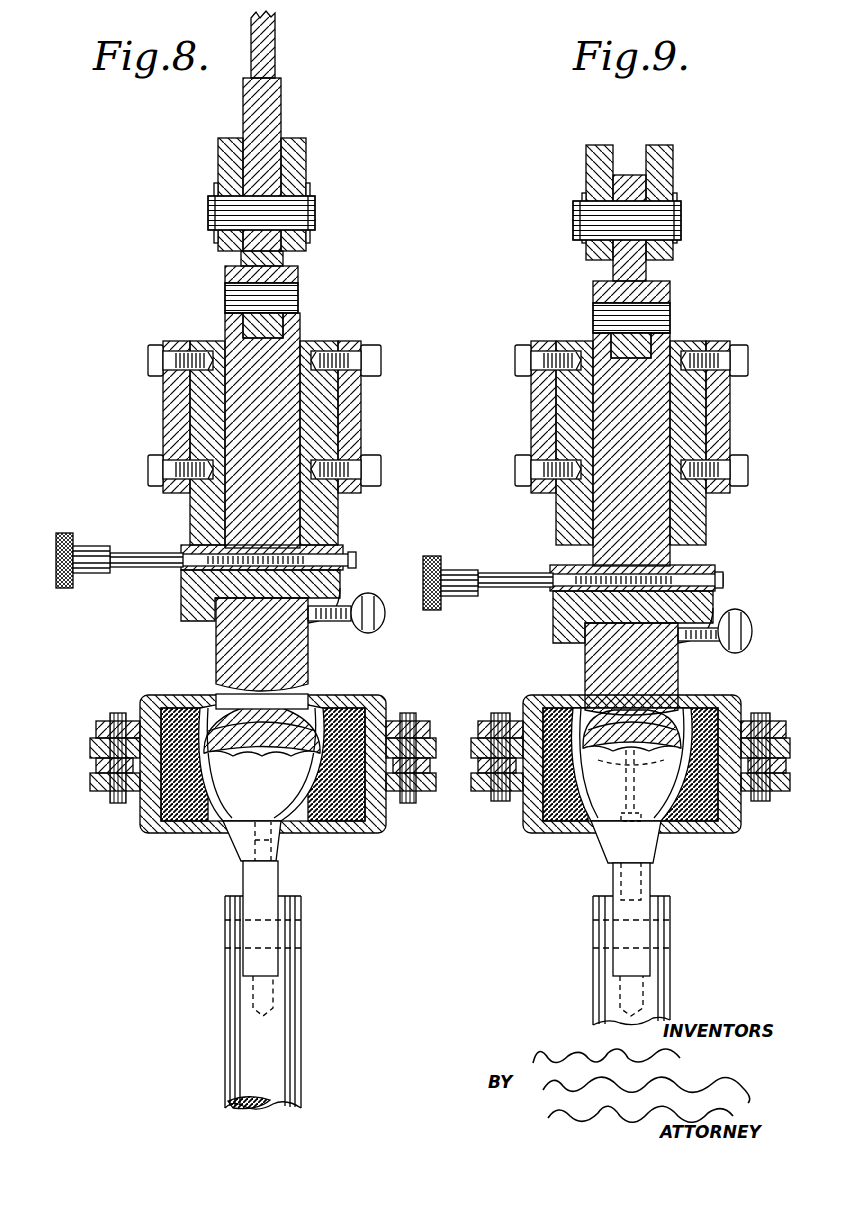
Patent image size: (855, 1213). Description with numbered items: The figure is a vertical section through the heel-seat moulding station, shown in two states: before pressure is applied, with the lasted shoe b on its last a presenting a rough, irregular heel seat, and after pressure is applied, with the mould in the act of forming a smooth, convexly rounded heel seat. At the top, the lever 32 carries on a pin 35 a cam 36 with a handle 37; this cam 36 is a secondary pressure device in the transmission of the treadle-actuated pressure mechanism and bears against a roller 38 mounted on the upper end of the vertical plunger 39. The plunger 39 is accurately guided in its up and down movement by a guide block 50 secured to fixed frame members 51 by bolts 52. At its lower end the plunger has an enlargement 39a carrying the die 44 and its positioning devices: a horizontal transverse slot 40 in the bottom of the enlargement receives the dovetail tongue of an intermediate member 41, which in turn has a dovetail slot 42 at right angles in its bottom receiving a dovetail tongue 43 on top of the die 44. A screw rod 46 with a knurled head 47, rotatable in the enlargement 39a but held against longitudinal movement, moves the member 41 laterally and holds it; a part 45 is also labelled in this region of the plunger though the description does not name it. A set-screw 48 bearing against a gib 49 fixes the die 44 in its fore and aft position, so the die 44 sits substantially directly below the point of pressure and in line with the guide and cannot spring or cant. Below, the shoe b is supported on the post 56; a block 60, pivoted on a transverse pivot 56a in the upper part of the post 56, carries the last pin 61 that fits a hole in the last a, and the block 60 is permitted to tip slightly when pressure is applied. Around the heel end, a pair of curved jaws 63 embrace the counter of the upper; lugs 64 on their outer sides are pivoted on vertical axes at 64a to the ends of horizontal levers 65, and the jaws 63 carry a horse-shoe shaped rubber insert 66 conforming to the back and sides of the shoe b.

In FIG. 8, the lever 32 is at (210, 143).
In FIG. 9, the lever 32 is at (578, 148).
In FIG. 8, the pin 35 is at (290, 200).
In FIG. 9, the pin 35 is at (673, 207).
In FIG. 8, the cam 36 is at (265, 250).
In FIG. 9, the cam 36 is at (640, 262).
In FIG. 8, the handle 37 is at (268, 28).
In FIG. 8, the roller 38 is at (240, 263).
In FIG. 9, the roller 38 is at (630, 287).
In FIG. 8, the vertical plunger 39 is at (275, 340).
In FIG. 9, the vertical plunger 39 is at (600, 520).
In FIG. 8, the enlargement 39a is at (175, 555).
In FIG. 9, the enlargement 39a is at (705, 573).
In FIG. 8, the horizontal transverse slot 40 is at (175, 580).
In FIG. 9, the horizontal transverse slot 40 is at (545, 595).
In FIG. 8, the intermediate member 41 is at (200, 580).
In FIG. 9, the intermediate member 41 is at (705, 600).
In FIG. 8, the dovetail slot 42 is at (200, 612).
In FIG. 9, the dovetail slot 42 is at (555, 625).
In FIG. 8, the dovetail tongue 43 is at (302, 617).
In FIG. 9, the dovetail tongue 43 is at (660, 625).
In FIG. 8, the die 44 is at (285, 657).
In FIG. 9, the die 44 is at (577, 665).
In FIG. 8, the pin 45 is at (285, 540).
In FIG. 9, the pin 45 is at (660, 548).
In FIG. 8, the screw rod 46 is at (147, 545).
In FIG. 9, the screw rod 46 is at (490, 572).
In FIG. 8, the knurled head 47 is at (55, 580).
In FIG. 9, the knurled head 47 is at (424, 548).
In FIG. 8, the set-screw 48 is at (364, 612).
In FIG. 9, the set-screw 48 is at (735, 612).
In FIG. 8, the gib 49 is at (348, 553).
In FIG. 9, the gib 49 is at (700, 615).
In FIG. 8, the guide block 50 is at (315, 410).
In FIG. 9, the guide block 50 is at (690, 410).
In FIG. 8, the fixed frame members 51 is at (160, 408).
In FIG. 9, the fixed frame members 51 is at (705, 333).
In FIG. 8, the bolts 52 is at (145, 352).
In FIG. 9, the bolts 52 is at (507, 352).
In FIG. 8, the post 56 is at (283, 975).
In FIG. 9, the post 56 is at (655, 958).
In FIG. 8, the transverse pivot 56a is at (230, 945).
In FIG. 9, the transverse pivot 56a is at (655, 905).
In FIG. 8, the block 60 is at (270, 895).
In FIG. 9, the block 60 is at (610, 920).
In FIG. 8, the last pin 61 is at (240, 832).
In FIG. 9, the last pin 61 is at (633, 870).
In FIG. 8, the curved jaws 63 is at (150, 810).
In FIG. 9, the curved jaws 63 is at (545, 800).
In FIG. 8, the lugs 64 is at (105, 785).
In FIG. 9, the lugs 64 is at (483, 770).
In FIG. 8, the pivot 64a is at (112, 737).
In FIG. 9, the pivot 64a is at (755, 690).
In FIG. 8, the horizontal levers 65 is at (95, 755).
In FIG. 9, the horizontal levers 65 is at (470, 735).
In FIG. 8, the rubber insert 66 is at (172, 820).
In FIG. 9, the rubber insert 66 is at (540, 820).
In FIG. 8, the last a is at (270, 840).
In FIG. 9, the last a is at (640, 845).
In FIG. 8, the shoe b is at (280, 795).
In FIG. 9, the shoe b is at (590, 790).